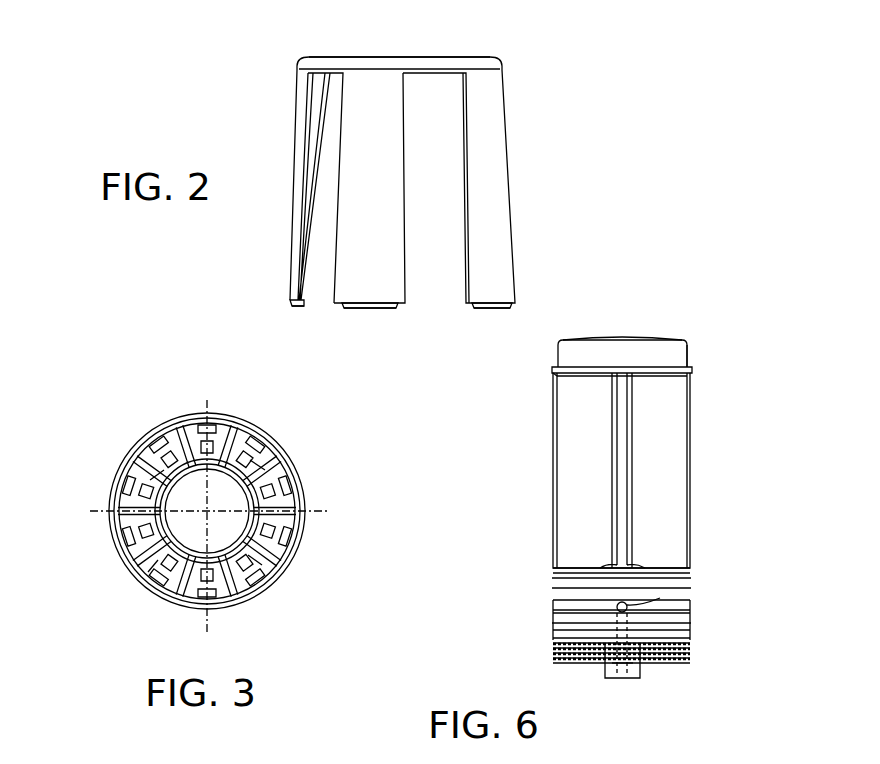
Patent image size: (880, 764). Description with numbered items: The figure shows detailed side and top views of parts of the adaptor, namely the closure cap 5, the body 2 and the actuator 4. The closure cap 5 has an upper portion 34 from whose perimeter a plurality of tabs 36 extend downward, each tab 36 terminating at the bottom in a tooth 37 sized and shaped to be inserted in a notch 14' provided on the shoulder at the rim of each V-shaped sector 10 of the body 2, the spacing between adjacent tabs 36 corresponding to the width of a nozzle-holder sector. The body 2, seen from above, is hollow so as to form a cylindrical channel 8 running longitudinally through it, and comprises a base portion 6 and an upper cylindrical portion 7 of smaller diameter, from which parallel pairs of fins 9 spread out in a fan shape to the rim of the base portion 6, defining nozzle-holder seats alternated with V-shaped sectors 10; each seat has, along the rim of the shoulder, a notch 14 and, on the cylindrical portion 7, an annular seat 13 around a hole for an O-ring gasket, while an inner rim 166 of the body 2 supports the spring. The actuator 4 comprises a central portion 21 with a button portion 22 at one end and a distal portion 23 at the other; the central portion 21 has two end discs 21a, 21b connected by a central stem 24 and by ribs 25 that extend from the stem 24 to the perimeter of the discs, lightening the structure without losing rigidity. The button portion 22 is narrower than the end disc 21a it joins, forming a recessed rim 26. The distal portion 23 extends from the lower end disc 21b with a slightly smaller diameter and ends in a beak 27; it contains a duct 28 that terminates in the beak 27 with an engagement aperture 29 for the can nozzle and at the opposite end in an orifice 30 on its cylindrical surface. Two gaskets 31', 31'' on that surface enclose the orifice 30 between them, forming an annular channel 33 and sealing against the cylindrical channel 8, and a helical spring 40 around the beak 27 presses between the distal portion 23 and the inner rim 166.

In FIG. 2, the closure cap 5 is at (527, 152).
In FIG. 2, the upper portion 34 is at (483, 57).
In FIG. 2, the tabs 36 is at (300, 243).
In FIG. 2, the tooth 37 is at (292, 308).
In FIG. 3, the body 2 is at (152, 335).
In FIG. 3, the base portion 6 is at (303, 468).
In FIG. 3, the upper cylindrical portion 7 is at (262, 491).
In FIG. 3, the V-shaped sectors 10 is at (267, 588).
In FIG. 3, the cylindrical channel 8 is at (214, 519).
In FIG. 3, the inner rim 166 is at (180, 485).
In FIG. 3, the fins 9 is at (212, 423).
In FIG. 3, the annular seat 13 is at (150, 438).
In FIG. 3, the notch 14 is at (218, 498).
In FIG. 3, the notch 14' is at (205, 501).
In FIG. 6, the actuator 4 is at (698, 348).
In FIG. 6, the button portion 22 is at (660, 350).
In FIG. 6, the recessed rim 26 is at (690, 363).
In FIG. 6, the central portion 21 is at (662, 518).
In FIG. 6, the end disc 21a is at (553, 370).
In FIG. 6, the end disc 21b is at (698, 568).
In FIG. 6, the ribs 25 is at (680, 408).
In FIG. 6, the central stem 24 is at (632, 495).
In FIG. 6, the gasket 31'' is at (594, 577).
In FIG. 6, the orifice 30 is at (660, 598).
In FIG. 6, the annular channel 33 is at (555, 602).
In FIG. 6, the gasket 31' is at (648, 626).
In FIG. 6, the distal portion 23 is at (552, 632).
In FIG. 6, the spring 40 is at (690, 653).
In FIG. 6, the beak 27 is at (640, 666).
In FIG. 6, the duct 28 is at (615, 663).
In FIG. 6, the engagement aperture 29 is at (622, 678).